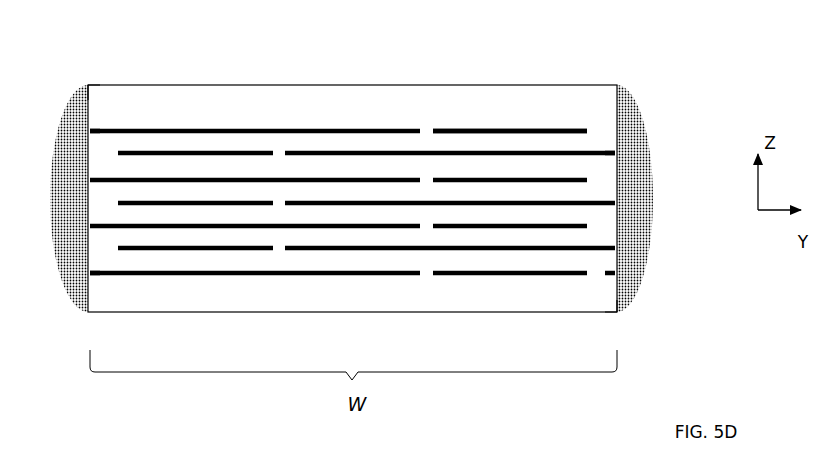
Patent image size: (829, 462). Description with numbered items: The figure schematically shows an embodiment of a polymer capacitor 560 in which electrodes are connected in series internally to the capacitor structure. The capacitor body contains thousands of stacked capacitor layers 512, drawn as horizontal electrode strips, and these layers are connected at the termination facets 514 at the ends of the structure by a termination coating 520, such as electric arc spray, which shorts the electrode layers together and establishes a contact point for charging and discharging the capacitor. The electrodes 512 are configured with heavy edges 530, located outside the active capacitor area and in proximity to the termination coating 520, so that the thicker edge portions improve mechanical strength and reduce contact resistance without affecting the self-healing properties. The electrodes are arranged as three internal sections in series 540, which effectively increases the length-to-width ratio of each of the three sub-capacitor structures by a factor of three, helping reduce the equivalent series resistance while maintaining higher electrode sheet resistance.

The capacitor layers 512 is at (262, 118).
The termination facets 514 is at (95, 99).
The termination coating 520 is at (72, 143).
The heavy edges 530 is at (100, 128).
The internal sections of electrodes in series 540 is at (427, 120).
The flexible circuit assembly 560 is at (690, 93).